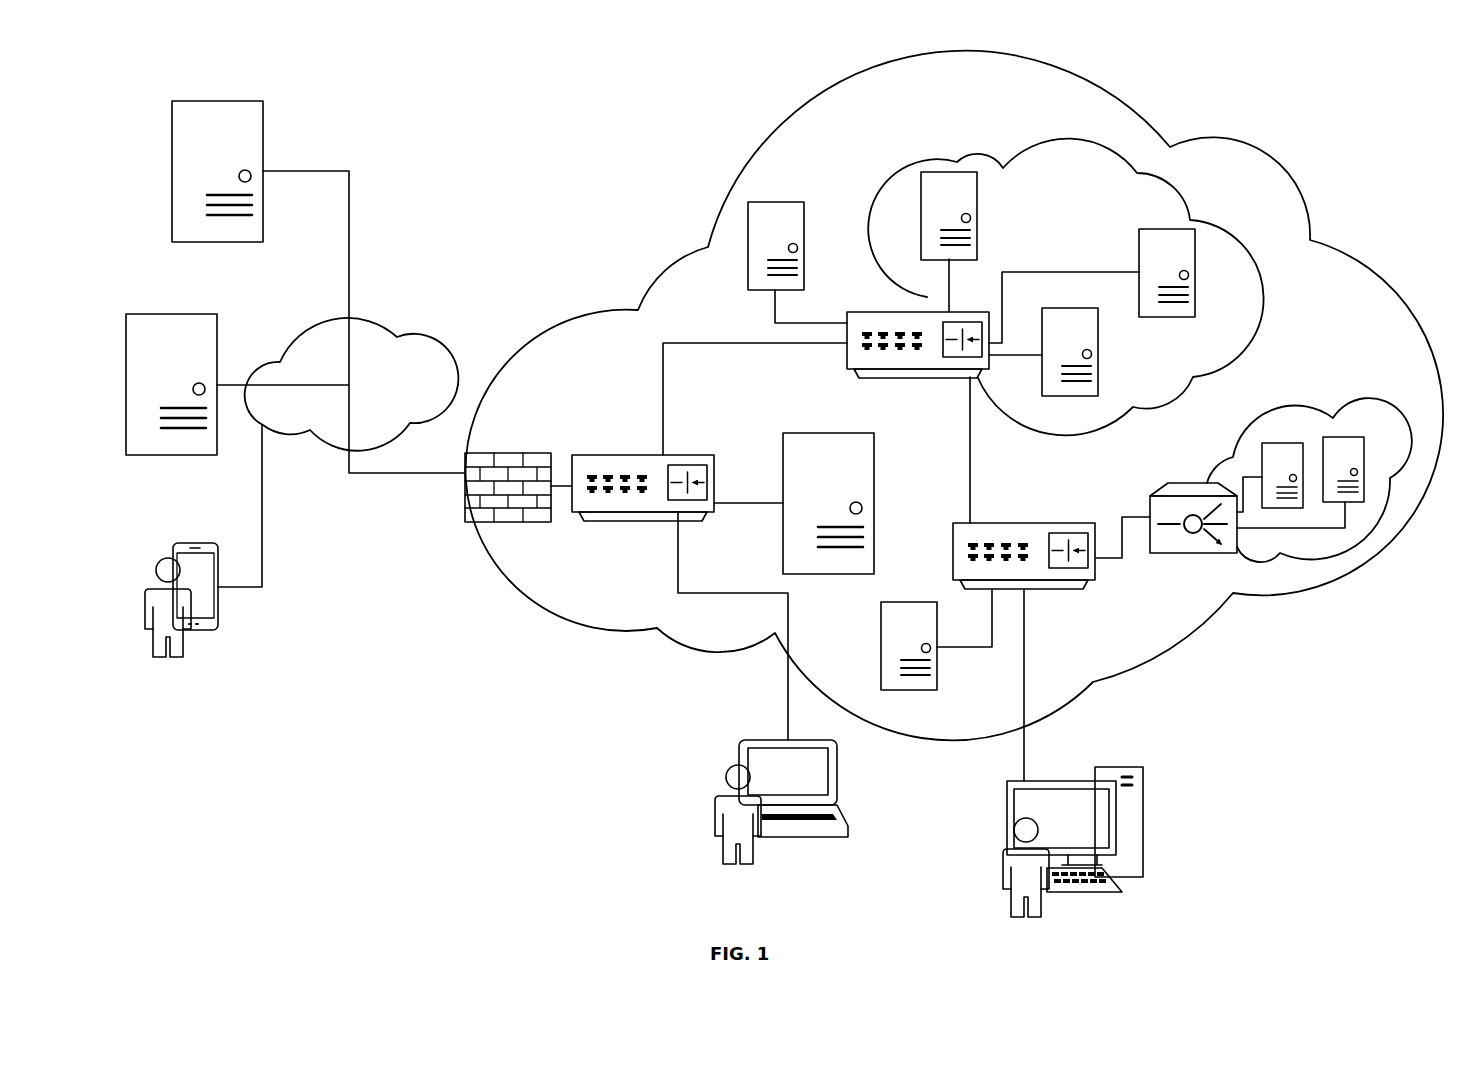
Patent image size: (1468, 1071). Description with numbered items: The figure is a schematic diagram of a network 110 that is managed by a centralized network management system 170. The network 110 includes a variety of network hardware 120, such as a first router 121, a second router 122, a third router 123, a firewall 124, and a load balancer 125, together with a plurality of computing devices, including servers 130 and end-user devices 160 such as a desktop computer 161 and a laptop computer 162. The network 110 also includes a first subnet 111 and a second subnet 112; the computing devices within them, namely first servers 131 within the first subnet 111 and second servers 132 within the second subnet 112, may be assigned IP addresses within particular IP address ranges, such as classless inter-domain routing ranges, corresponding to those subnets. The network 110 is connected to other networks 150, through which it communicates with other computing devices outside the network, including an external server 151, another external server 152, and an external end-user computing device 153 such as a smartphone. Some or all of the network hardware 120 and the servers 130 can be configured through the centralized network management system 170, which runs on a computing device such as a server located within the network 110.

The network 110 is at (812, 110).
The first subnet 111 is at (1017, 143).
The second subnet 112 is at (1338, 401).
The network hardware 120 is at (851, 421).
The first router 121 is at (633, 455).
The second router 122 is at (870, 306).
The third router 123 is at (960, 523).
The firewall 124 is at (535, 453).
The load balancer 125 is at (1188, 489).
The servers 130 is at (805, 189).
The first servers 131 is at (993, 227).
The second servers 132 is at (1386, 434).
The other networks 150 is at (320, 327).
The external server 151 is at (136, 314).
The external server 152 is at (188, 101).
The external end-user computing device 153 is at (190, 543).
The end-user devices 160 is at (971, 815).
The desktop computer 161 is at (1120, 767).
The laptop computer 162 is at (765, 740).
The centralized network management system 170 is at (812, 433).